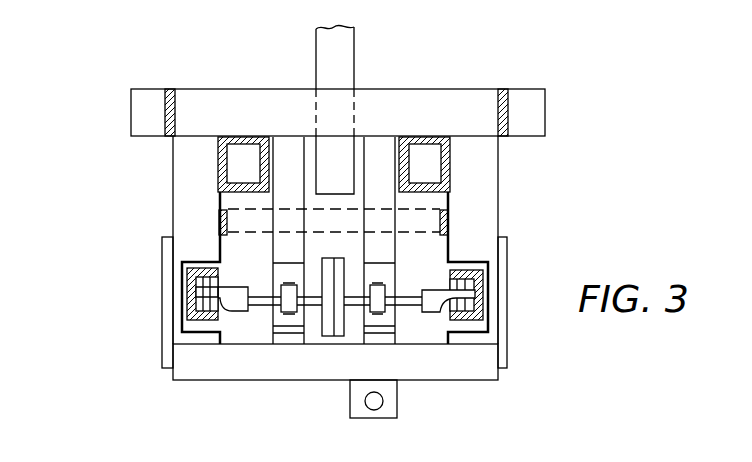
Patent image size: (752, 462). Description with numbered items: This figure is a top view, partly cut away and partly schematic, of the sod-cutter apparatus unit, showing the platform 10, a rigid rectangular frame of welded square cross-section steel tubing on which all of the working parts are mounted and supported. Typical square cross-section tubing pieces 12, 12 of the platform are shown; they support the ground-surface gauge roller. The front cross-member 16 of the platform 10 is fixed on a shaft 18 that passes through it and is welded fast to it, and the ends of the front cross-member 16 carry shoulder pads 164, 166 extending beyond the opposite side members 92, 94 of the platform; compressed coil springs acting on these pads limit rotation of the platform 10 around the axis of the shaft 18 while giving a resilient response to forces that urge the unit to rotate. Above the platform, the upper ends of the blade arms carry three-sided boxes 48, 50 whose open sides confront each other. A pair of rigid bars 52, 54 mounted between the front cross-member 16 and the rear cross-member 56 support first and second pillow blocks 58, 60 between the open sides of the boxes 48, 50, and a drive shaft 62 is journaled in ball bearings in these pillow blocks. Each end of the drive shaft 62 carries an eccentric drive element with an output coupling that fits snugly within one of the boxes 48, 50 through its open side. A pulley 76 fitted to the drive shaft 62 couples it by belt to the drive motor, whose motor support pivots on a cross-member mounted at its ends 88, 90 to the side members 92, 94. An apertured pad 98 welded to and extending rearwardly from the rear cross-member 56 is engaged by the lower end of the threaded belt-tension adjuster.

The platform 10 is at (520, 218).
The square cross-section tubing pieces 12 is at (235, 159).
The front cross-member 16 is at (430, 93).
The shaft 18 is at (347, 65).
The three-sided box 48 is at (203, 284).
The three-sided box 50 is at (462, 325).
The rigid bar 52 is at (282, 250).
The rigid bar 54 is at (392, 253).
The rear cross-member 56 is at (464, 372).
The first pillow block 58 is at (287, 315).
The second pillow block 60 is at (383, 312).
The drive shaft 62 is at (260, 313).
The pulley 76 is at (334, 338).
The end of cross-member 88 is at (220, 227).
The end of cross-member 90 is at (455, 225).
The side member 92 is at (183, 193).
The side member 94 is at (488, 195).
The apertured pad 98 is at (362, 418).
The shoulder pad 164 is at (133, 110).
The shoulder pad 166 is at (540, 125).